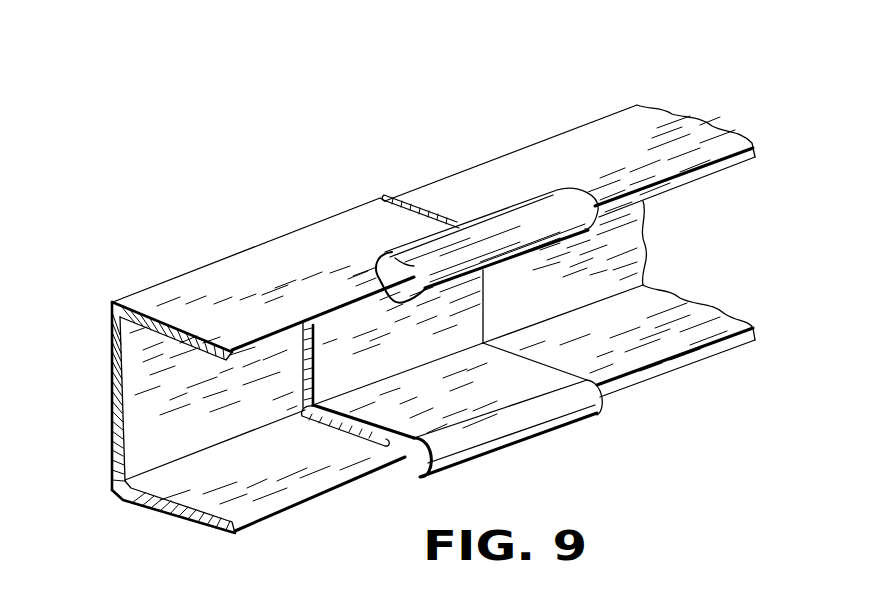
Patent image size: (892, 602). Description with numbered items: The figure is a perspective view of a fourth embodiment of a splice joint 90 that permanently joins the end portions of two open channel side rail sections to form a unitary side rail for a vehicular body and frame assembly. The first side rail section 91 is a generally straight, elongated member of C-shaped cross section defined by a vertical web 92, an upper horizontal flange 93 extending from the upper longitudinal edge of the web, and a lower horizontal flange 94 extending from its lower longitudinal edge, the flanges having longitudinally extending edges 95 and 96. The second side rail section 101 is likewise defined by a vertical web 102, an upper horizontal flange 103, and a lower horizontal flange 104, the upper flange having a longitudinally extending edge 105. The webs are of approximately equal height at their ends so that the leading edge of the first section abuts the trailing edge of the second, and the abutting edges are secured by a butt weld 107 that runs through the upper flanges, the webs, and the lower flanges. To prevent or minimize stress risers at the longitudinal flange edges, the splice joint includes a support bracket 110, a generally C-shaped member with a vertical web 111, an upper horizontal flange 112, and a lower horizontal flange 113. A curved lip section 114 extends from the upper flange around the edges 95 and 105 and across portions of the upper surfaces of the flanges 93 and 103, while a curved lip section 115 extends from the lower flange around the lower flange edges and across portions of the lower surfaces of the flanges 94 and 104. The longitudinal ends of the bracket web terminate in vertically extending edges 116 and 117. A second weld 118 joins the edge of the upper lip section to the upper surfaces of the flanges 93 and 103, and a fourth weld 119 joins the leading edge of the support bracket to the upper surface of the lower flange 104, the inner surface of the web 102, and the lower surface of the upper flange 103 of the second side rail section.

The splice joint 90 is at (226, 128).
The first side rail section 91 is at (622, 70).
The vertical web 92 is at (627, 250).
The upper horizontal flange 93 is at (603, 159).
The lower horizontal flange 94 is at (603, 354).
The longitudinally extending edge 95 is at (718, 167).
The longitudinally extending edge 96 is at (710, 352).
The second side rail section 101 is at (156, 250).
The vertical web 102 is at (147, 400).
The upper horizontal flange 103 is at (256, 306).
The lower horizontal flange 104 is at (197, 493).
The longitudinally extending edge 105 is at (250, 343).
The butt weld 107 is at (413, 205).
The support bracket 110 is at (590, 482).
The vertical web 111 is at (392, 355).
The upper horizontal flange 112 is at (393, 305).
The lower horizontal flange 113 is at (430, 409).
The curved lip section 114 is at (531, 217).
The curved lip section 115 is at (410, 474).
The vertically extending edge 116 is at (318, 362).
The vertically extending edge 117 is at (485, 290).
The second weld 118 is at (497, 212).
The fourth weld 119 is at (330, 427).